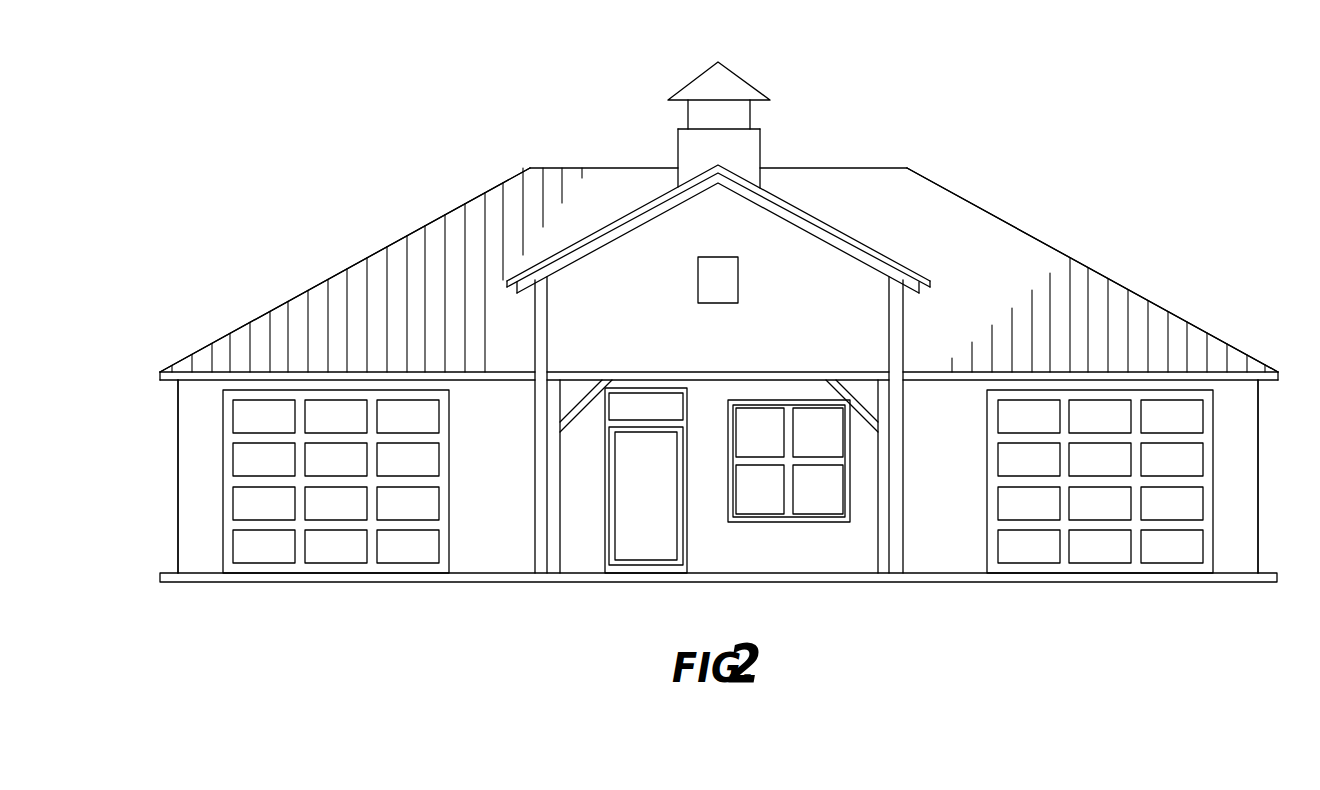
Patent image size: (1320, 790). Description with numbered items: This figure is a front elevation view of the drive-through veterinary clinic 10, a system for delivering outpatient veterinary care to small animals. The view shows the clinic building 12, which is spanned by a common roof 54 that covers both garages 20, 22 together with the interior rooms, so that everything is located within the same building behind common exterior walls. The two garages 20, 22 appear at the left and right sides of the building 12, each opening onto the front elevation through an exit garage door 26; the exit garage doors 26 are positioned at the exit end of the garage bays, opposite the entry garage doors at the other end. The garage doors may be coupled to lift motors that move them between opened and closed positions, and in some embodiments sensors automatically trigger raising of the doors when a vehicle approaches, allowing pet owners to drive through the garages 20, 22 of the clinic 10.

The drive-through veterinary clinic 10 is at (1082, 134).
The clinic building 12 is at (927, 200).
The common roof 54 is at (1062, 280).
The garage 20 is at (1181, 280).
The garage 22 is at (224, 300).
The exit garage door 26 is at (347, 545).